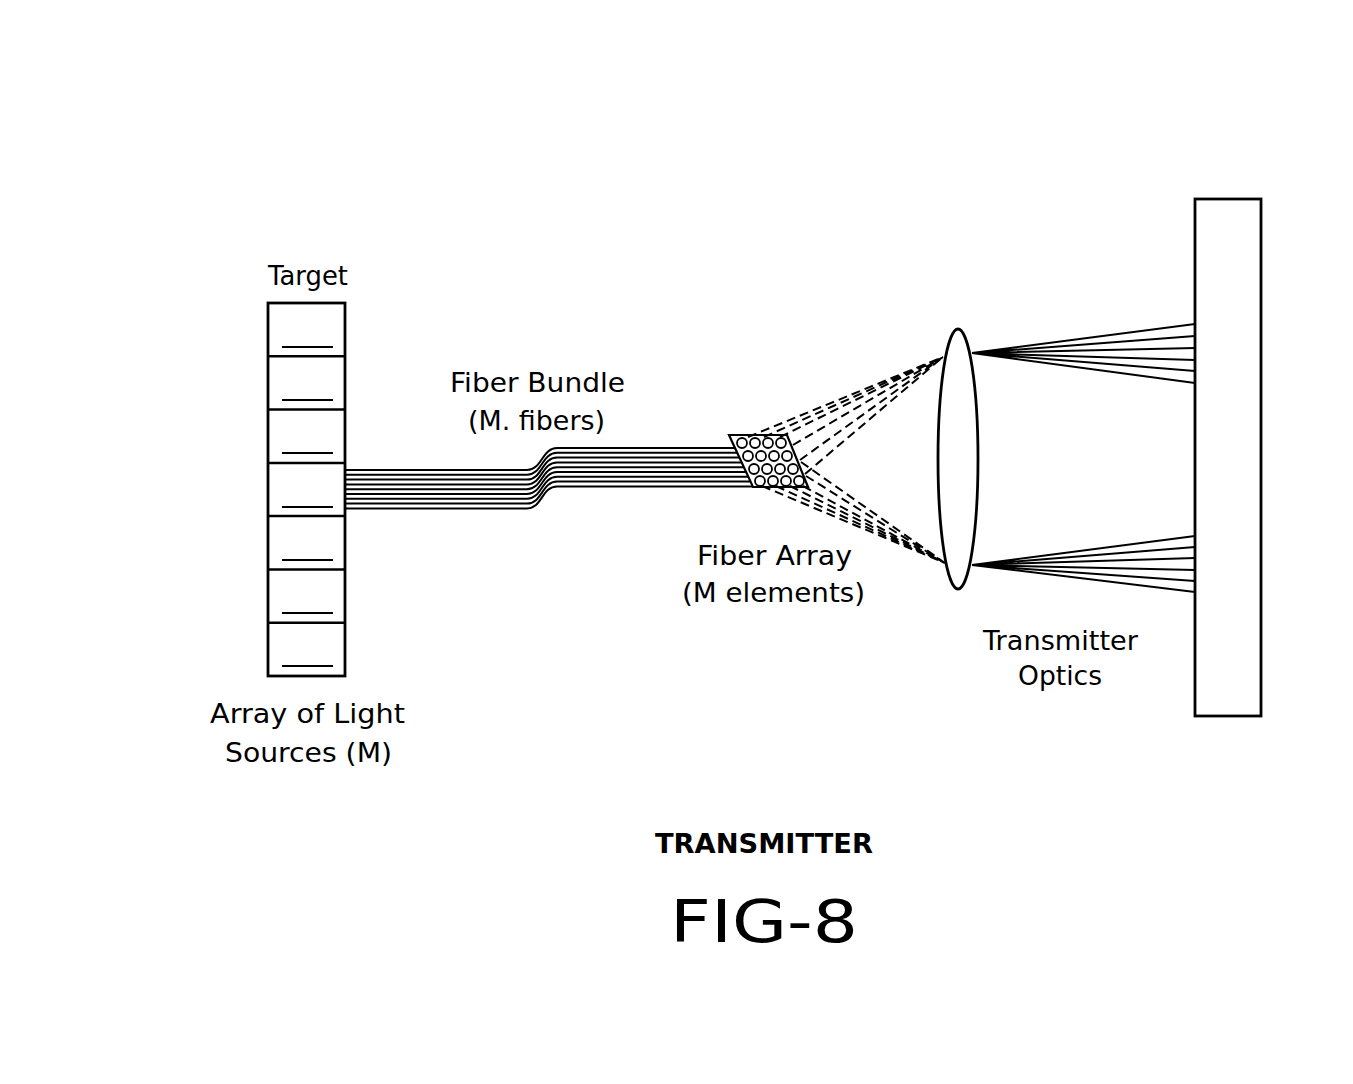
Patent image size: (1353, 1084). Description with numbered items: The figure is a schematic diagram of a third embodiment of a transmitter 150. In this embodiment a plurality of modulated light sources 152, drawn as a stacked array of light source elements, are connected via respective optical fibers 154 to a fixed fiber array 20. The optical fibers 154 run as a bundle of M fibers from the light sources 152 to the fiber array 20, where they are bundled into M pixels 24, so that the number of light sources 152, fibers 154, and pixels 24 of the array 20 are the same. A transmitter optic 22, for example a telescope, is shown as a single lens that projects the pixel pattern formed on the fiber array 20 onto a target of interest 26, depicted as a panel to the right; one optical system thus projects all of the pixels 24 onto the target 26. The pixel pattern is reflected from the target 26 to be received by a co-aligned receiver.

The transmitter 150 is at (186, 192).
The modulated light sources 152 is at (306, 489).
The optical fibers 154 is at (567, 487).
The fixed fiber array 20 is at (735, 414).
The pixels 24 is at (768, 440).
The transmitter optic 22 is at (940, 603).
The target of interest 26 is at (1212, 474).